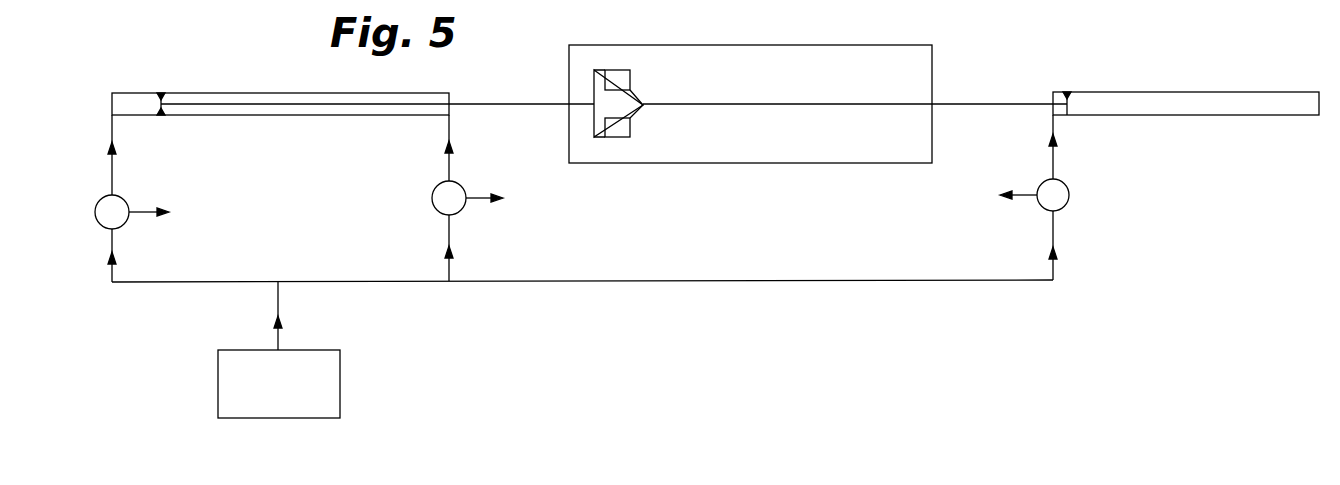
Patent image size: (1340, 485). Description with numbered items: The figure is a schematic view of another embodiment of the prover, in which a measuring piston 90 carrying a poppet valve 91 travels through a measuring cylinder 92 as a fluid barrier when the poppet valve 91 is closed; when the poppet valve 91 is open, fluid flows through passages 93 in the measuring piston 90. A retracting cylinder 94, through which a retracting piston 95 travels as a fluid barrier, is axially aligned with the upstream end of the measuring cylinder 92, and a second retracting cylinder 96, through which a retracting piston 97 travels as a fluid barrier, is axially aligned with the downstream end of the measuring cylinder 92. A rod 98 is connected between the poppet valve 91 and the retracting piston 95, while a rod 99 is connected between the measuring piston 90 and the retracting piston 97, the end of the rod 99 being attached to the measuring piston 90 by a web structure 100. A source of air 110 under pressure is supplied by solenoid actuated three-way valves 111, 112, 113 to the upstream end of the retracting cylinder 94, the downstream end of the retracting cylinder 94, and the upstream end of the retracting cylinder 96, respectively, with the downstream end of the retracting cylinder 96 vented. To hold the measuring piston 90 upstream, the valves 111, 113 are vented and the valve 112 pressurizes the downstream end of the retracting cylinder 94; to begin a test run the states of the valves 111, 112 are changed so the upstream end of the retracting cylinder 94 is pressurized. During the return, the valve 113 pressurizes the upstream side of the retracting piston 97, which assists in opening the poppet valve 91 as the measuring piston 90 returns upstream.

The measuring piston 90 is at (618, 140).
The poppet valve 91 is at (593, 78).
The measuring cylinder 92 is at (760, 164).
The passages 93 is at (625, 100).
The retracting cylinder 94 is at (287, 116).
The retracting piston 95 is at (164, 113).
The retracting cylinder 96 is at (1150, 117).
The retracting piston 97 is at (1068, 117).
The rod 98 is at (521, 105).
The rod 99 is at (948, 105).
The web structure 100 is at (635, 118).
The source of air 110 is at (340, 351).
The solenoid actuated three-way valve 111 is at (125, 226).
The solenoid actuated three-way valve 112 is at (458, 212).
The solenoid actuated three-way valve 113 is at (1069, 200).